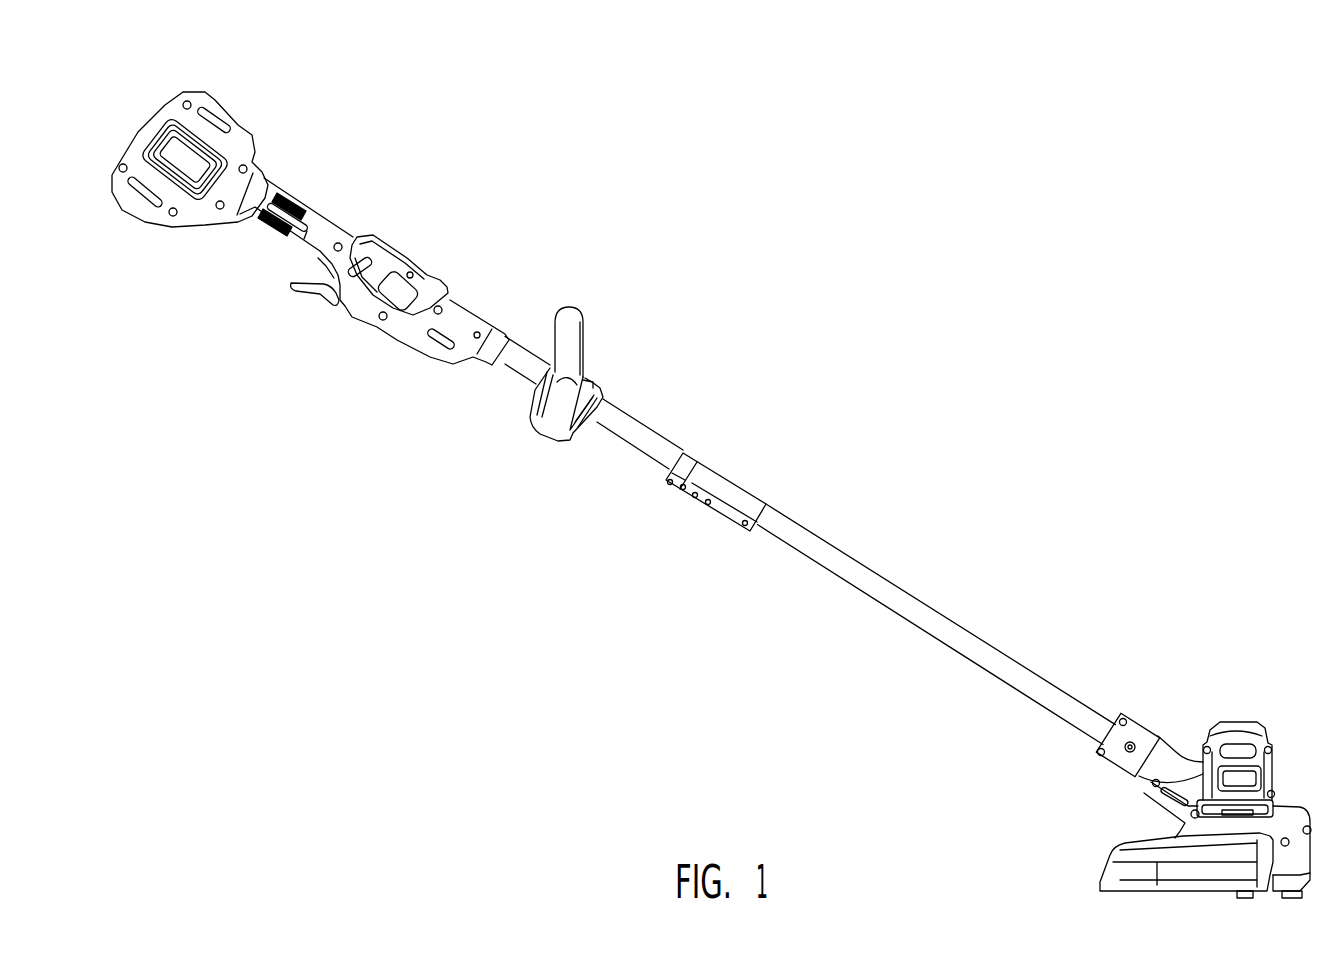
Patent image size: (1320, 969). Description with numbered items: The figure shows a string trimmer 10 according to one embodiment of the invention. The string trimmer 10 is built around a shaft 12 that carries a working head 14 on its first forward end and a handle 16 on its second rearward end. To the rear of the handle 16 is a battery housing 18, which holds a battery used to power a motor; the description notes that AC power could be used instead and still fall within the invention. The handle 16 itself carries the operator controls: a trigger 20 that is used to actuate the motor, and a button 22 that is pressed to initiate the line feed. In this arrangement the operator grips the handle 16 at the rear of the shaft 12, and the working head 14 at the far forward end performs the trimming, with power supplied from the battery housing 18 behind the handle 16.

The string trimmer 10 is at (735, 373).
The shaft 12 is at (810, 558).
The working head 14 is at (1255, 700).
The handle 16 is at (330, 338).
The battery housing 18 is at (172, 225).
The trigger 20 is at (296, 293).
The button 22 is at (383, 240).